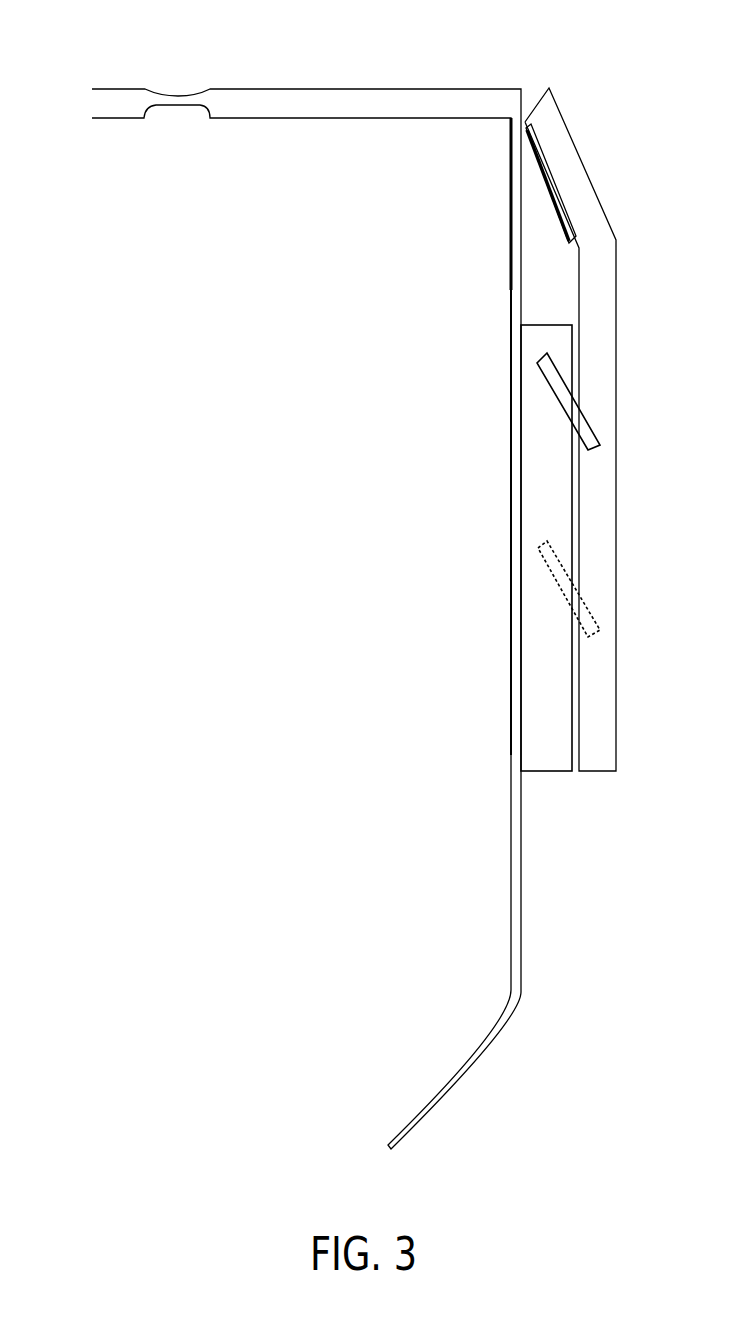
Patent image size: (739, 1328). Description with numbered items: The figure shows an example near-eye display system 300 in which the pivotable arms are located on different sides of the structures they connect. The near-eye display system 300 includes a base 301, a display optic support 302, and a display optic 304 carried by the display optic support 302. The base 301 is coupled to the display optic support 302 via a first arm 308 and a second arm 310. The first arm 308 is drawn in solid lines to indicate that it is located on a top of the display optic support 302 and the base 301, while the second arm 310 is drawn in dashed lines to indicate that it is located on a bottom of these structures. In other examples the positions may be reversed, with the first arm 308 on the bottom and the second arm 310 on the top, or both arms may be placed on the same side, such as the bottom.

The near-eye display system 300 is at (98, 27).
The base 301 is at (535, 482).
The display optic support 302 is at (617, 478).
The display optic 304 is at (540, 167).
The first arm 308 is at (578, 417).
The second arm 310 is at (580, 620).